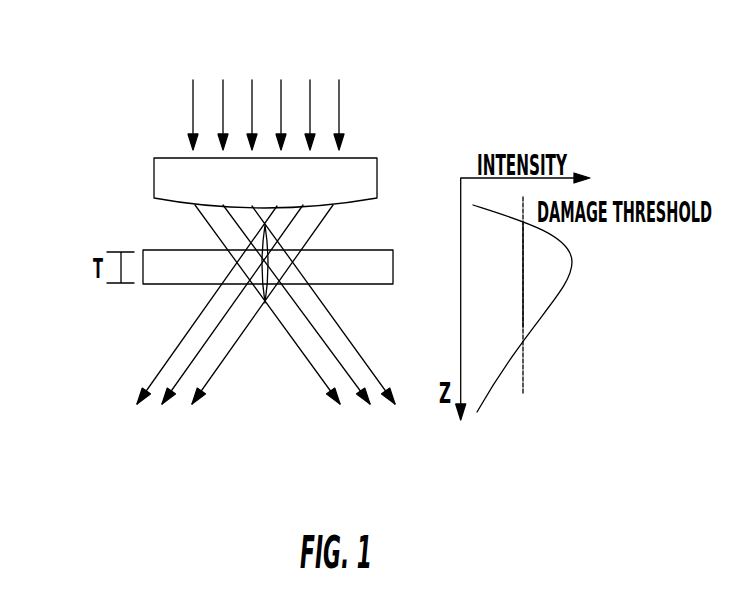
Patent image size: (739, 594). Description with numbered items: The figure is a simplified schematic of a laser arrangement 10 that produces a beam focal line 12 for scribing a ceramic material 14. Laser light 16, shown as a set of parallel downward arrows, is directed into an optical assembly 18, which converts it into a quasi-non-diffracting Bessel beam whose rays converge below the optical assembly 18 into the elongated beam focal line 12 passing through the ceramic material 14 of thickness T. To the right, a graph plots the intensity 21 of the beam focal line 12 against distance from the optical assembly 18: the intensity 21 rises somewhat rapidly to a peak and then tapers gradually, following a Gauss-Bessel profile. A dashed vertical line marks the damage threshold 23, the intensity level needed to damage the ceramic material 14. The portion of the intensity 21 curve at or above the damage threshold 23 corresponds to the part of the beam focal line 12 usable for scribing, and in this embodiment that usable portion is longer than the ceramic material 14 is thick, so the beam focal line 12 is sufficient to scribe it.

The laser arrangement 10 is at (115, 98).
The beam focal line 12 is at (265, 268).
The ceramic material 14 is at (378, 272).
The laser light 16 is at (373, 90).
The optical assembly 18 is at (355, 185).
The intensity 21 is at (573, 262).
The damage threshold 23 is at (523, 298).